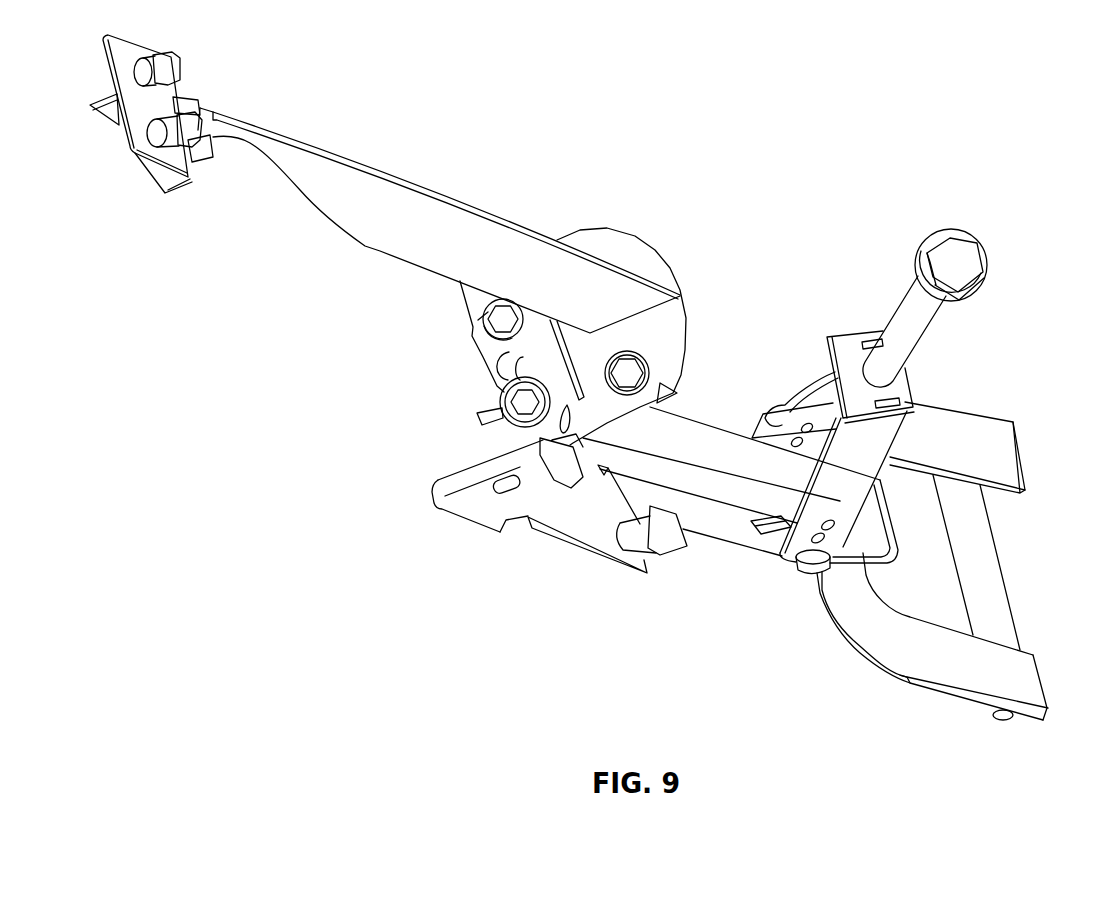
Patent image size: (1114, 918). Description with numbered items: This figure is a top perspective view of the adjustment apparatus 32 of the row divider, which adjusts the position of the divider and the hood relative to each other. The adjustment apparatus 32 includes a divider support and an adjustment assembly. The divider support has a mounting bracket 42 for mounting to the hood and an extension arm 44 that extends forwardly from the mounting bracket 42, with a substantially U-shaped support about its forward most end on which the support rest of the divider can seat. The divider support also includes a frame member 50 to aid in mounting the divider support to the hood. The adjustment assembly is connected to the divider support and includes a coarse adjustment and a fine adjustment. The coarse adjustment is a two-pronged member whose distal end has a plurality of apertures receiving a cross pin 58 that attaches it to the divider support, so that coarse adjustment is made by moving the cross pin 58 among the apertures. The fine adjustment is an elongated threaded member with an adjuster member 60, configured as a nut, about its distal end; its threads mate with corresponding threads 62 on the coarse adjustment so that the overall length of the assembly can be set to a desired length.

The adjustment apparatus 32 is at (846, 120).
The frame member 50 is at (412, 176).
The extension arm 44 is at (727, 550).
The mounting bracket 42 is at (480, 528).
The cross pin 58 is at (812, 568).
The threads 62 is at (908, 383).
The adjuster member 60 is at (962, 245).